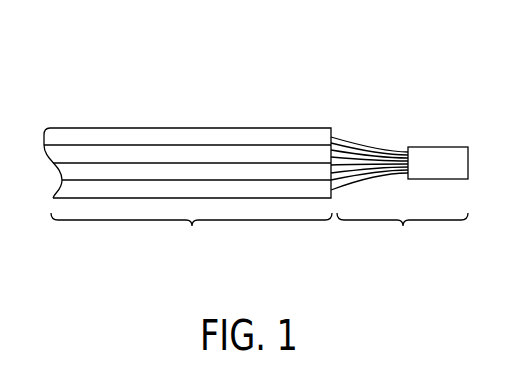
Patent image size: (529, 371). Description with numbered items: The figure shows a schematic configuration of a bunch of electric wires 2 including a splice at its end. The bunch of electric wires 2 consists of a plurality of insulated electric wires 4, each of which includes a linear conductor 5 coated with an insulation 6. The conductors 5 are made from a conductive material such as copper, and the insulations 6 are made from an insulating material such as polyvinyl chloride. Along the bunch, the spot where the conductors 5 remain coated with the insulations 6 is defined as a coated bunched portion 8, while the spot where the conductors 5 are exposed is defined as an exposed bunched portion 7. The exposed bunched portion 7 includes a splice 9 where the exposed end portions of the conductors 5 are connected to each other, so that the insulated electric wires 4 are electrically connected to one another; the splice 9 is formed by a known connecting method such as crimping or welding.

The bunch of electric wires 2 is at (263, 100).
The insulated electric wires 4 is at (133, 155).
The conductor 5 is at (362, 158).
The insulation 6 is at (302, 142).
The exposed bunched portion 7 is at (402, 231).
The coated bunched portion 8 is at (191, 231).
The splice 9 is at (433, 160).